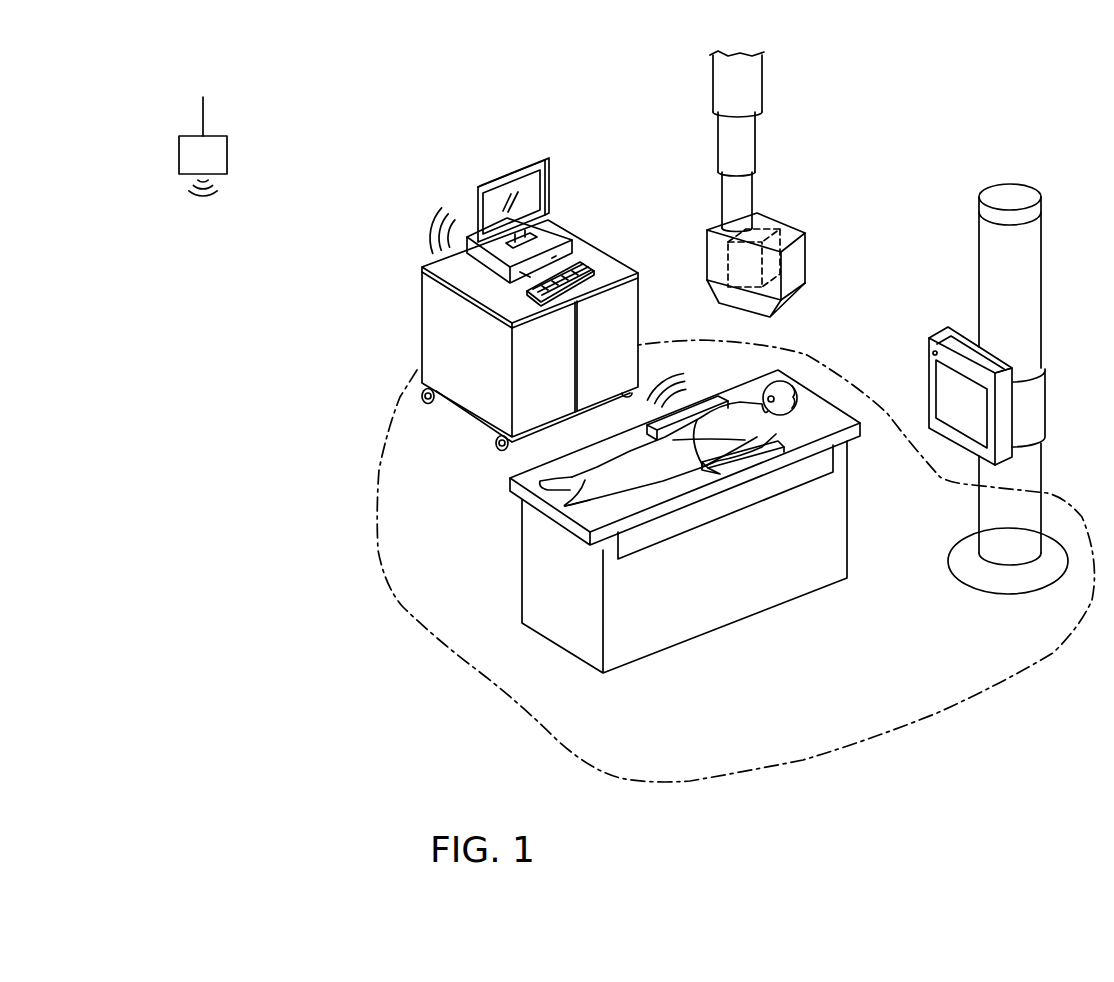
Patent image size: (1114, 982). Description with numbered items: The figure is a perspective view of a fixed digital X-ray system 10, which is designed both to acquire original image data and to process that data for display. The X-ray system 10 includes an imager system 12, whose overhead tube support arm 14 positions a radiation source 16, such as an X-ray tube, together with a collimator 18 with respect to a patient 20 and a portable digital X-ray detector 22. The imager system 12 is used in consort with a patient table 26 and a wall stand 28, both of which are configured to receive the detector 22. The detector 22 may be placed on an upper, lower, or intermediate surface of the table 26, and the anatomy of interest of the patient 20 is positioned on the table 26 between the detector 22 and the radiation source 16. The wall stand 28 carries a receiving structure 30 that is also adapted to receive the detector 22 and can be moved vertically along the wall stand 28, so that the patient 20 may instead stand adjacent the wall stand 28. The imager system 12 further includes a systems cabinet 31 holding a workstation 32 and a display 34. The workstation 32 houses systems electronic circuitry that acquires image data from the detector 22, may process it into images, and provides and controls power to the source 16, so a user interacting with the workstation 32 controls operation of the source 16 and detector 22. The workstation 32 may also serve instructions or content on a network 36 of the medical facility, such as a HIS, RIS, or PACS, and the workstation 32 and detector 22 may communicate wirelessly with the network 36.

The X-ray system 10 is at (318, 81).
The imager system 12 is at (883, 146).
The overhead tube support arm 14 is at (762, 88).
The radiation source 16 is at (769, 228).
The collimator 18 is at (770, 310).
The patient 20 is at (727, 405).
The portable digital X-ray detector 22 is at (738, 474).
The patient table 26 is at (848, 533).
The wall stand 28 is at (978, 228).
The receiving structure 30 is at (940, 331).
The systems cabinet 31 is at (633, 248).
The workstation 32 is at (565, 228).
The display 34 is at (515, 168).
The network 36 is at (227, 153).